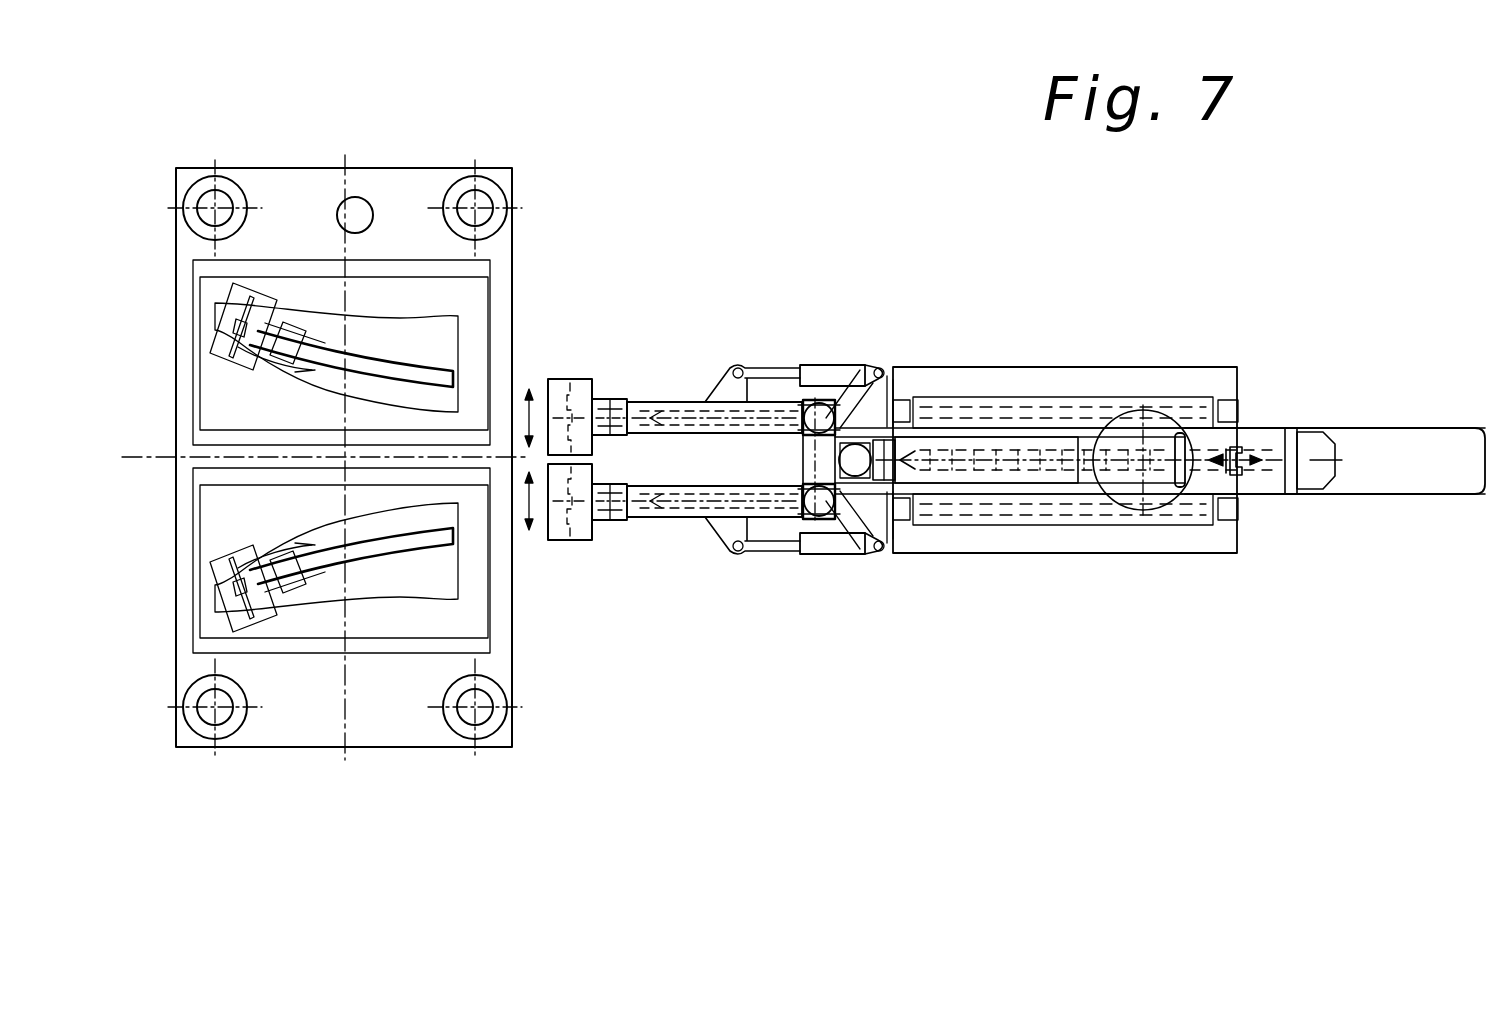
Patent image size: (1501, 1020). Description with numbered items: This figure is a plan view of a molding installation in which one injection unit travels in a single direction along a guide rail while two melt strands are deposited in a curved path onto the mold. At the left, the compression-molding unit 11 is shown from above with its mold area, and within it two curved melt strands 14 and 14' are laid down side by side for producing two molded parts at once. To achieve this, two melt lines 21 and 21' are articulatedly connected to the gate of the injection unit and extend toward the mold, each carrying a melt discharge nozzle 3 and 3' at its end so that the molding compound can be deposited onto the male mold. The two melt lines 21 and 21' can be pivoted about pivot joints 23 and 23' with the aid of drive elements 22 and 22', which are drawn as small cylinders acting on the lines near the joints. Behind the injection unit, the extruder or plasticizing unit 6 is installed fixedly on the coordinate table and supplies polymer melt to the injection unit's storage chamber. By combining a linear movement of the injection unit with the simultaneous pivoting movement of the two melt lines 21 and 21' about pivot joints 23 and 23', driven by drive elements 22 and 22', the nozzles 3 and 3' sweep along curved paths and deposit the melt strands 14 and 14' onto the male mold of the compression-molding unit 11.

The compression-molding unit 11 is at (383, 149).
The melt strand 14' is at (366, 225).
The melt strand 14 is at (363, 695).
The melt discharge nozzle 3' is at (580, 330).
The deposition nozzle 3 is at (577, 595).
The melt line 21' is at (697, 320).
The melt line 21 is at (697, 605).
The drive element 22' is at (799, 316).
The drive element 22 is at (799, 608).
The pivot joint 23' is at (873, 320).
The pivot joint 23 is at (870, 605).
The extruder (plasticizing unit) 6 is at (1004, 446).